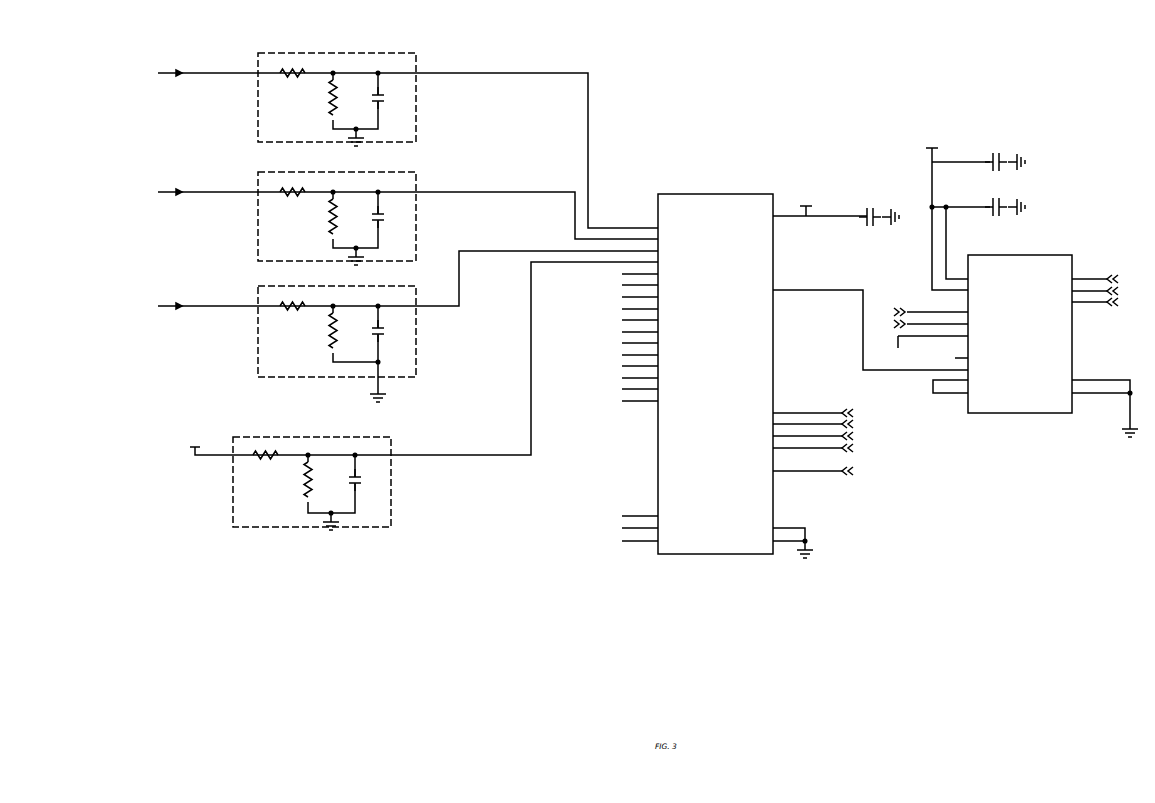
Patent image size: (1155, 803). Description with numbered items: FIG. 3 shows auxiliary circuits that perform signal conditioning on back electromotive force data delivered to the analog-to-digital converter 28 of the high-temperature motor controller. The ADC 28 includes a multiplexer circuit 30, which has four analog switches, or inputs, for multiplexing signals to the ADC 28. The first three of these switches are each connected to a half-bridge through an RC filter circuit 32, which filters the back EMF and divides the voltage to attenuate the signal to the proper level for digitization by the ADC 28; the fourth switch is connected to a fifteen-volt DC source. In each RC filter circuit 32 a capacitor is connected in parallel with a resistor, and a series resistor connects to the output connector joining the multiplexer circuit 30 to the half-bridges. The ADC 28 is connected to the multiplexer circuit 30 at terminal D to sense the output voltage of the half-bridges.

The analog-to-digital converter 28 is at (985, 415).
The multiplexer circuit 30 is at (733, 556).
The RC filter circuit 32 is at (424, 124).